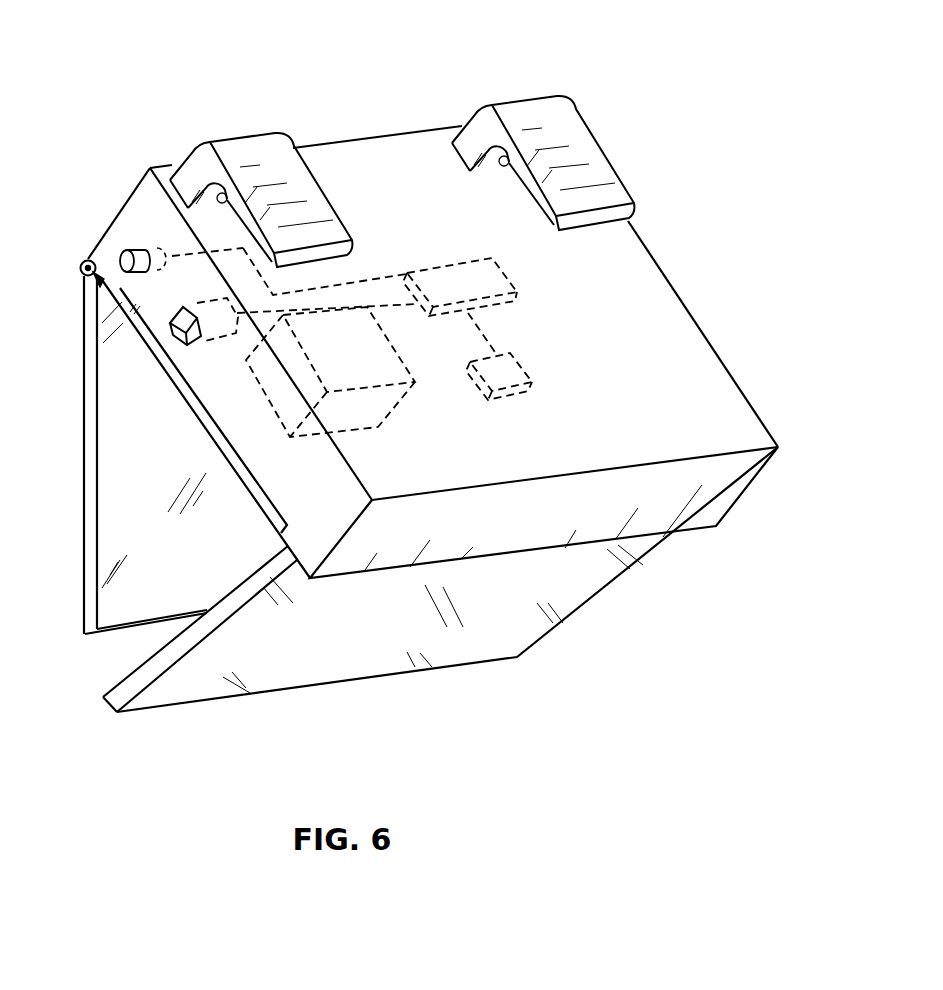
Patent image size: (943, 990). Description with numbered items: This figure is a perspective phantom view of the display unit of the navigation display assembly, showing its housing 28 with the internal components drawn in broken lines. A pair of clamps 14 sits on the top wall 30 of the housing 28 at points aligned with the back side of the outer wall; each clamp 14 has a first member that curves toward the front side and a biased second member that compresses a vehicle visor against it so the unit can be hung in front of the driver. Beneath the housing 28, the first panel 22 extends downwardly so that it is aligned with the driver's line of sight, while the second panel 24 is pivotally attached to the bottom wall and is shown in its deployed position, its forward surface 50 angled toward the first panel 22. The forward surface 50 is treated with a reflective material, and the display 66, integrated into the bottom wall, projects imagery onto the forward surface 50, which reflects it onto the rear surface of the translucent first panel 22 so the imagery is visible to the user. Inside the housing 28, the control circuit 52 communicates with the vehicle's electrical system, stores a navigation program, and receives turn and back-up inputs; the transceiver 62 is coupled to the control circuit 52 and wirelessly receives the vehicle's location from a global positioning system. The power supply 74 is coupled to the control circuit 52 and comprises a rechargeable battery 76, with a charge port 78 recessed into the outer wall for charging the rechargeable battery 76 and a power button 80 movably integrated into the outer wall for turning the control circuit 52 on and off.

The clamp 14 is at (265, 127).
The first panel 22 is at (116, 714).
The second panel 24 is at (94, 636).
The housing 28 is at (771, 458).
The top wall 30 is at (684, 326).
The forward surface 50 is at (116, 490).
The control circuit 52 is at (452, 262).
The transceiver 62 is at (516, 392).
The display 66 is at (168, 378).
The power supply 74 is at (343, 301).
The rechargeable battery 76 is at (366, 418).
The charge port 78 is at (178, 334).
The power button 80 is at (122, 254).